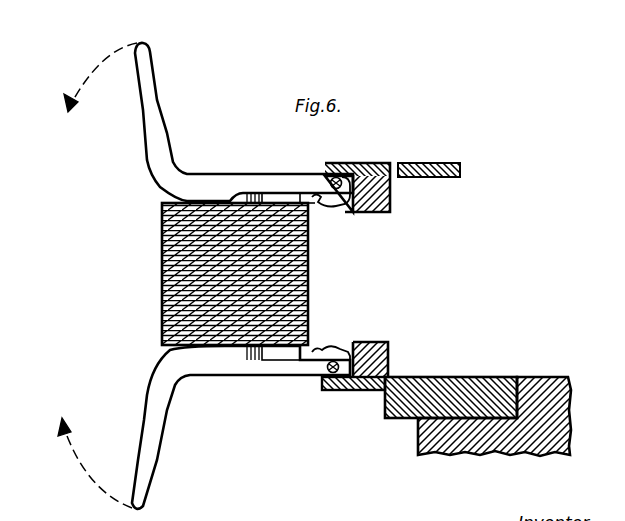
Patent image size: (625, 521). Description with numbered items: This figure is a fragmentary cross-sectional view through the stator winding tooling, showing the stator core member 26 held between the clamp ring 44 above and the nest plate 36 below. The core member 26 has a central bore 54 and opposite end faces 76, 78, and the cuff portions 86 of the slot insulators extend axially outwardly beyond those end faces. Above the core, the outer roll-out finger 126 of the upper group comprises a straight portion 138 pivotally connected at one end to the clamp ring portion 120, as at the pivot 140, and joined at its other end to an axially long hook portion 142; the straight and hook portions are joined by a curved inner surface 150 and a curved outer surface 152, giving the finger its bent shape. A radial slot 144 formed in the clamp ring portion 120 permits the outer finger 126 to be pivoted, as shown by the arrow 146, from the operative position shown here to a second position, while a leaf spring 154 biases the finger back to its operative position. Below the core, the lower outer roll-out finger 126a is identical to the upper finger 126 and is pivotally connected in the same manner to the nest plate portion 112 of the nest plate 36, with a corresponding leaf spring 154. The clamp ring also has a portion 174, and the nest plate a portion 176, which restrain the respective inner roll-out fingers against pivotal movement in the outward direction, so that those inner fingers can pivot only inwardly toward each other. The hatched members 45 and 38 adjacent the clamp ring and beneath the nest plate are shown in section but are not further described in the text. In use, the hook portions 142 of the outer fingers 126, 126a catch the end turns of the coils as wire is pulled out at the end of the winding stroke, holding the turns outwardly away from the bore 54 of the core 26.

The arrow 146 is at (88, 70).
The hook portion 142 is at (162, 108).
The curved inner surface 150 is at (173, 163).
The outer roll-out finger 126 is at (213, 160).
The straight portion 138 is at (272, 173).
The curved outer surface 152 is at (147, 170).
The clamp ring portion 174 is at (337, 177).
The pivotal connection 140 is at (350, 163).
The clamp ring 44 is at (392, 190).
The upper mounting strip 45 is at (442, 162).
The clamp ring portion 120 is at (392, 195).
The end face 76 is at (297, 203).
The radial slot 144 is at (320, 203).
The stator core member 26 is at (308, 281).
The bore 54 is at (162, 294).
The leaf spring 154 is at (332, 345).
The nest plate portion 112 is at (365, 341).
The nest plate 36 is at (452, 377).
The wall member 38 is at (537, 377).
The cuff portion 86 is at (247, 360).
The end face 78 is at (281, 356).
The nest plate portion 176 is at (337, 392).
The lower outer roll-out finger 126a is at (185, 388).